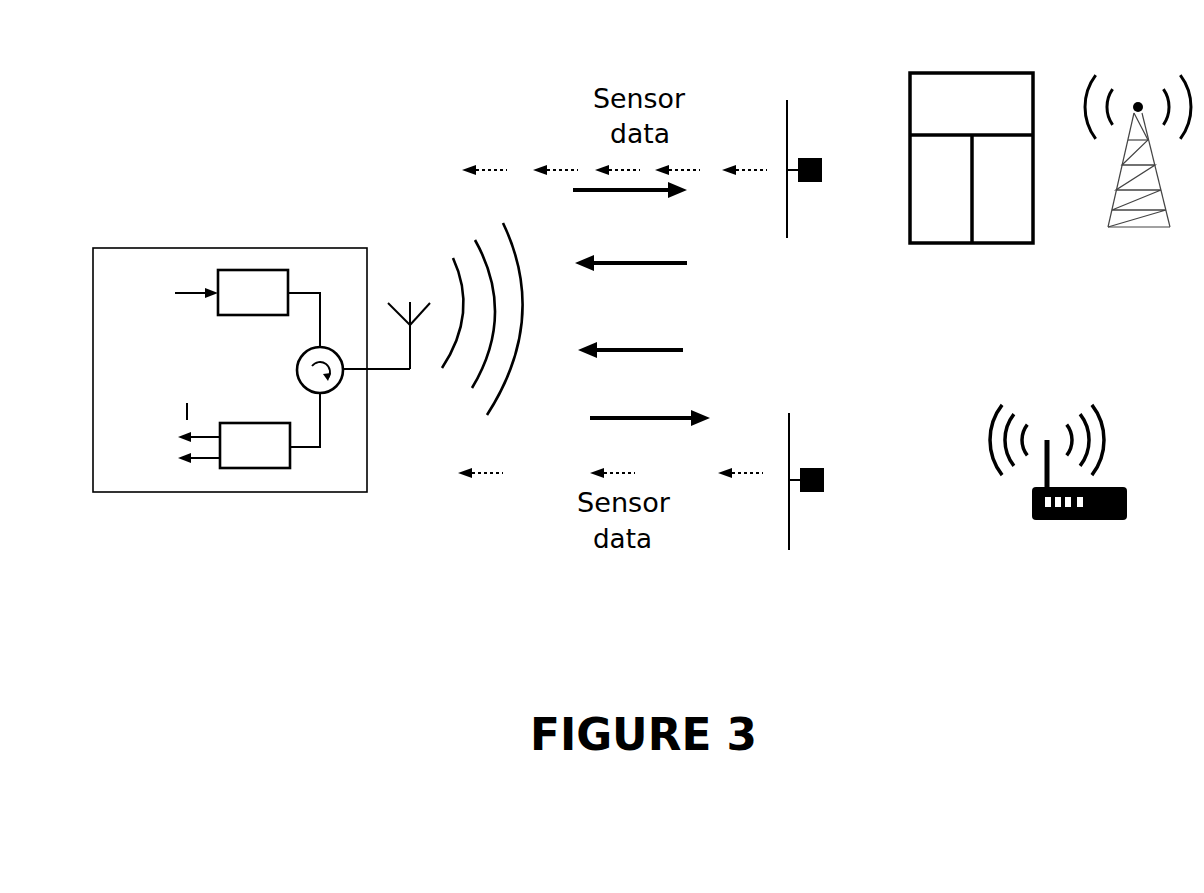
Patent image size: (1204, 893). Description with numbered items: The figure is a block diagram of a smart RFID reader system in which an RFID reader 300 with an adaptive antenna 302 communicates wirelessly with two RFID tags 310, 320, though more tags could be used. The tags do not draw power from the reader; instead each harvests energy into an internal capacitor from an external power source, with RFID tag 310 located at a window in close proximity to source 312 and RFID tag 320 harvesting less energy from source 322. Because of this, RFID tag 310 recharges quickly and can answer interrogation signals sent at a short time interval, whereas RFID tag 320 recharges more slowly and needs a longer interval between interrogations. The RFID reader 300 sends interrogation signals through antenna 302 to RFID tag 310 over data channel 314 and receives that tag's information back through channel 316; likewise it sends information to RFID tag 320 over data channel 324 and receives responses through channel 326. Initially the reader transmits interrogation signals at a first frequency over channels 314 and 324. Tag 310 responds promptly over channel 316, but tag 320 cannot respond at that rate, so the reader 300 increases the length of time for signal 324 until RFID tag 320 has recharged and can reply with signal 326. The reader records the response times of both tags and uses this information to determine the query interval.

The RFID reader 300 is at (230, 380).
The adaptive antenna 302 is at (433, 319).
The RFID tag 310 is at (834, 179).
The external power source 312 is at (1138, 182).
The data channel 314 is at (630, 208).
The channel 316 is at (631, 277).
The RFID tag 320 is at (845, 476).
The external power source 322 is at (1088, 447).
The data channel 324 is at (650, 430).
The channel 326 is at (630, 368).